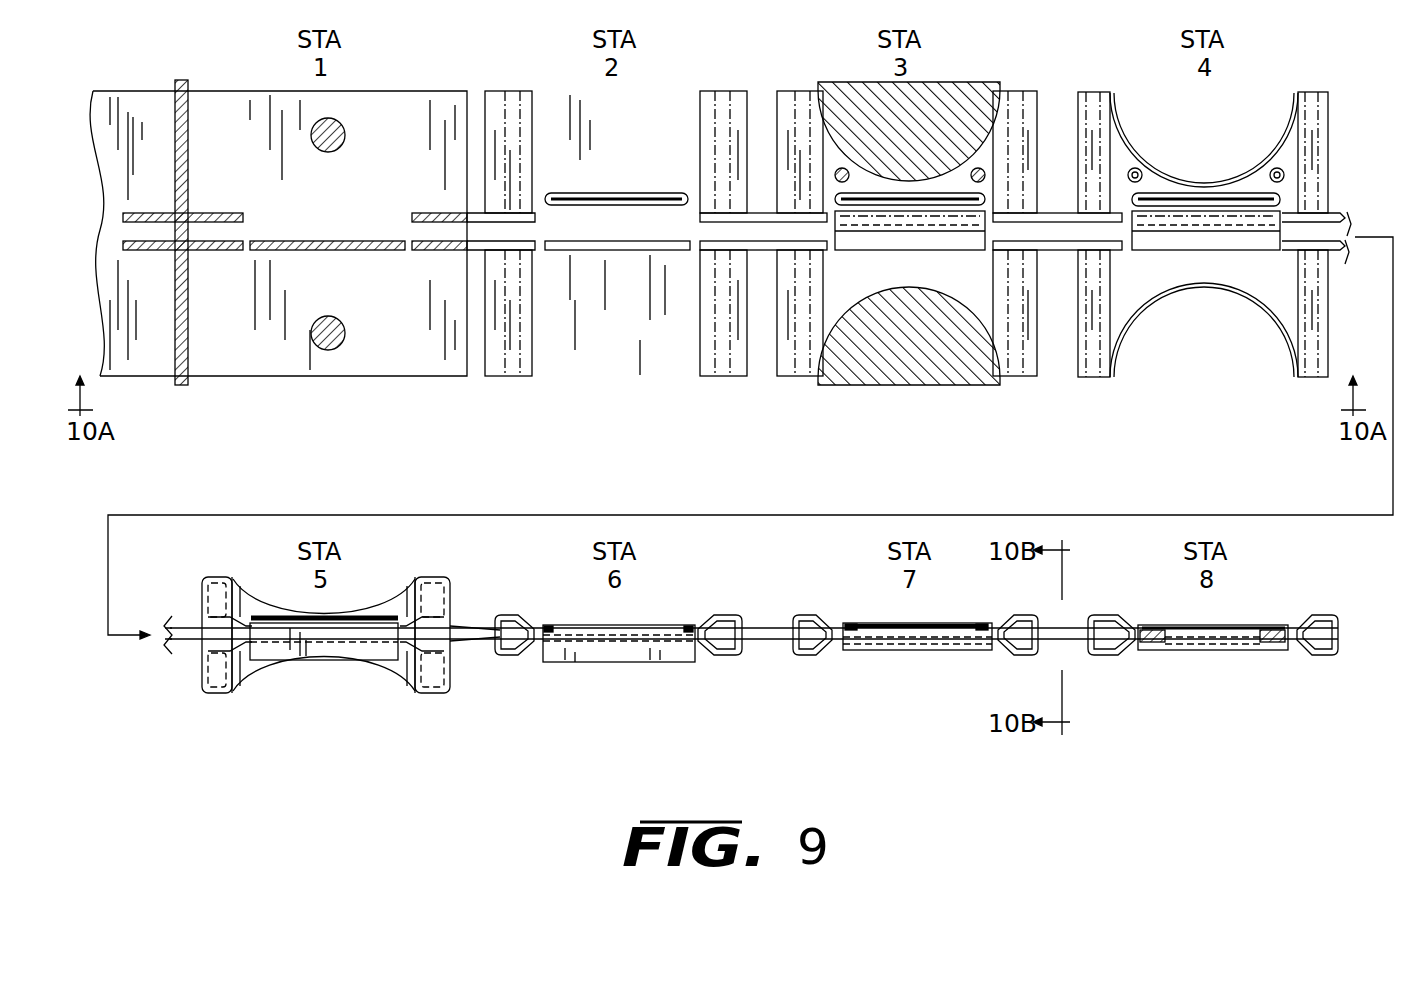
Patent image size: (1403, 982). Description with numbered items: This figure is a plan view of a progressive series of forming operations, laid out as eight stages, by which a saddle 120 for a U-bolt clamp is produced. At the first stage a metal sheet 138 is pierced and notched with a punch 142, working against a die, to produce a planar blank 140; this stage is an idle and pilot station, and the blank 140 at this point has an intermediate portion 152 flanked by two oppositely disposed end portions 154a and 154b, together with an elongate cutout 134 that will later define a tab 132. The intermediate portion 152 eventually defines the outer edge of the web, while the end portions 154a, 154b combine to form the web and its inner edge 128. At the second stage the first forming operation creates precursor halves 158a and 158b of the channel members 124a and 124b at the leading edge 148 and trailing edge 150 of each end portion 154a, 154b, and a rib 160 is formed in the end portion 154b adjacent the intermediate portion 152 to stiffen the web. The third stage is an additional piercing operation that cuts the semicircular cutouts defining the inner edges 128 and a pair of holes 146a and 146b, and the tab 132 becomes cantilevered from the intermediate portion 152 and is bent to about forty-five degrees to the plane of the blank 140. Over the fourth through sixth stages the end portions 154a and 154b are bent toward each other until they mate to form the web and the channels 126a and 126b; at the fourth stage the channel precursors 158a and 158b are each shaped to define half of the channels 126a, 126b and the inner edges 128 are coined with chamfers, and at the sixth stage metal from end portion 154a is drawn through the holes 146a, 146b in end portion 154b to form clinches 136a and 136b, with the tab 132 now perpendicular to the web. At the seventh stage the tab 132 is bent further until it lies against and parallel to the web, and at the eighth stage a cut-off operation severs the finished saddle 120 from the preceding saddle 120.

The saddle 120 is at (872, 626).
The channel member 124a is at (722, 655).
The channel member 124b is at (516, 655).
The channel 126a is at (728, 652).
The channel 126b is at (521, 660).
The inner edge 128 is at (1150, 165).
The tab 132 is at (905, 222).
The elongate cutout 134 is at (285, 242).
The clinch 136a is at (690, 624).
The clinch 136b is at (548, 624).
The metal sheet 138 is at (140, 108).
The planar blank 140 is at (248, 108).
The punch 142 is at (186, 388).
The hole 146a is at (1276, 168).
The hole 146b is at (1136, 168).
The leading edge 148 is at (758, 357).
The trailing edge 150 is at (490, 368).
The intermediate portion 152 is at (370, 227).
The end portion 154a is at (875, 286).
The end portion 154b is at (405, 108).
The precursor half 158a is at (728, 106).
The precursor half 158b is at (517, 105).
The rib 160 is at (648, 194).